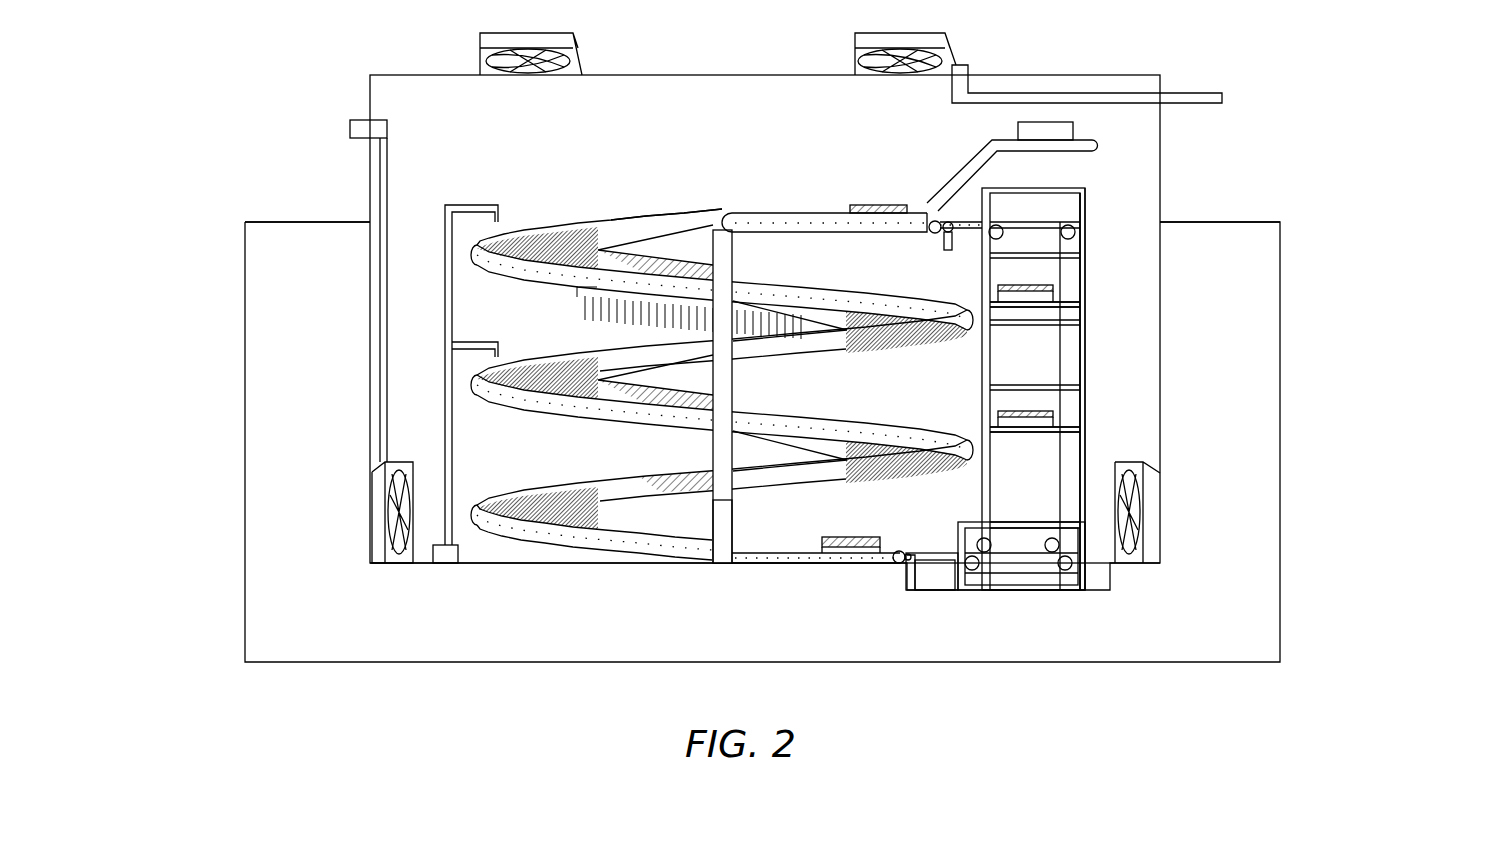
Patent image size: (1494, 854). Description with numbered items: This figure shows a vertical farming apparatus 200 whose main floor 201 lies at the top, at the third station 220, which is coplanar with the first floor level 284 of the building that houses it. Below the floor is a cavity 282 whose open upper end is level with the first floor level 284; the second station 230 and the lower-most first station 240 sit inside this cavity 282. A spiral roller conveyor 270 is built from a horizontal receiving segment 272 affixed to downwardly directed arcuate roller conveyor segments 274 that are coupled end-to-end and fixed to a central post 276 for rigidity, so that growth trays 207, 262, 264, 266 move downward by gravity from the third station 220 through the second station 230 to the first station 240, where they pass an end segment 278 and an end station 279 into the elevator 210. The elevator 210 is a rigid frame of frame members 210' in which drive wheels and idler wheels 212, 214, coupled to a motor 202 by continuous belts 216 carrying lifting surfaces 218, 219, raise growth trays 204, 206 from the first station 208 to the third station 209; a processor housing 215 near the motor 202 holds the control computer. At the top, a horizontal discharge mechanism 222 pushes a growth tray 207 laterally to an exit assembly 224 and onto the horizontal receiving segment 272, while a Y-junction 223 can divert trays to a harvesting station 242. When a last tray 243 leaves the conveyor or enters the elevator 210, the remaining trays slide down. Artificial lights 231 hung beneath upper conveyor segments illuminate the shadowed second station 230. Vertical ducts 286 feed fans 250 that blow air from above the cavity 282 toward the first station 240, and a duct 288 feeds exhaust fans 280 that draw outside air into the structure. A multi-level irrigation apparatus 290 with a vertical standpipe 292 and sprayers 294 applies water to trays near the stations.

The apparatus 200 is at (430, 143).
The main floor 201 is at (366, 556).
The motor 202 is at (905, 570).
The growth tray 204 is at (1060, 416).
The growth tray 206 is at (1060, 290).
The growth tray 207 is at (880, 205).
The first station 208 is at (1027, 522).
The third station 209 is at (1062, 228).
The elevator 210 is at (1061, 372).
The frame members 210' is at (1109, 384).
The drive wheels 212 is at (968, 590).
The idler wheels 214 is at (1063, 590).
The processor housing 215 is at (930, 590).
The continuous belts 216 is at (1088, 455).
The lifting surface 218 is at (1030, 430).
The lifting surface 219 is at (1045, 303).
The third station 220 is at (722, 252).
The horizontal discharge mechanism 222 is at (975, 244).
The Y-junction 223 is at (930, 206).
The exit assembly 224 is at (955, 198).
The second station 230 is at (722, 386).
The artificial lights 231 is at (597, 303).
The first station 240 is at (592, 494).
The harvesting station 242 is at (1018, 126).
The last tray 243 is at (878, 537).
The fan 250 is at (385, 466).
The growth tray 262 is at (648, 256).
The growth tray 264 is at (648, 388).
The growth tray 266 is at (688, 472).
The roller conveyor 270 is at (722, 393).
The horizontal receiving segment 272 is at (800, 213).
The arcuate roller conveyor segments 274 is at (622, 214).
The central post 276 is at (736, 250).
The end segment 278 is at (726, 565).
The end station 279 is at (790, 552).
The exhaust fan 280 is at (476, 44).
The cavity 282 is at (1284, 443).
The first floor level 284 is at (1280, 222).
The vertical duct 286 is at (348, 128).
The duct 288 is at (1222, 106).
The multi-level irrigation apparatus 290 is at (460, 558).
The vertical standpipe 292 is at (444, 402).
The sprayers 294 is at (444, 262).